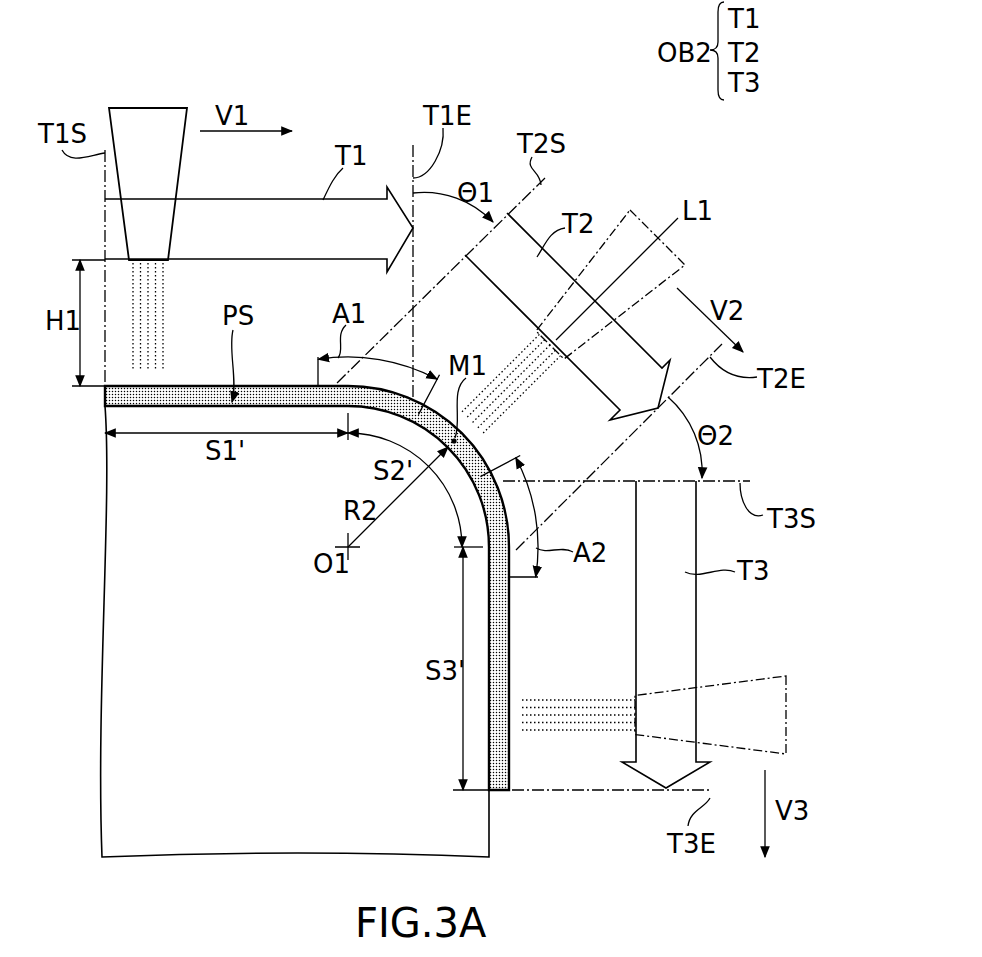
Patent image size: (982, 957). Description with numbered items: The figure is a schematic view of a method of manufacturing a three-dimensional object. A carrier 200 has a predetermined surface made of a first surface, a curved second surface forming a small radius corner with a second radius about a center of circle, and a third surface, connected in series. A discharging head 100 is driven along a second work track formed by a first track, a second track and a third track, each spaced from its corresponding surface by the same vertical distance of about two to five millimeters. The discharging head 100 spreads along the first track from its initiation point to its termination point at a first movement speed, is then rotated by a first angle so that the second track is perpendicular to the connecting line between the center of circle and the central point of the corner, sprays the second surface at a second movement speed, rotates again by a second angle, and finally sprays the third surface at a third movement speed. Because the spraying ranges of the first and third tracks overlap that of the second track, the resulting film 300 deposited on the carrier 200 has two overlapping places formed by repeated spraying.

The discharging head 100 is at (152, 118).
The carrier 200 is at (123, 652).
The film 300 is at (105, 393).